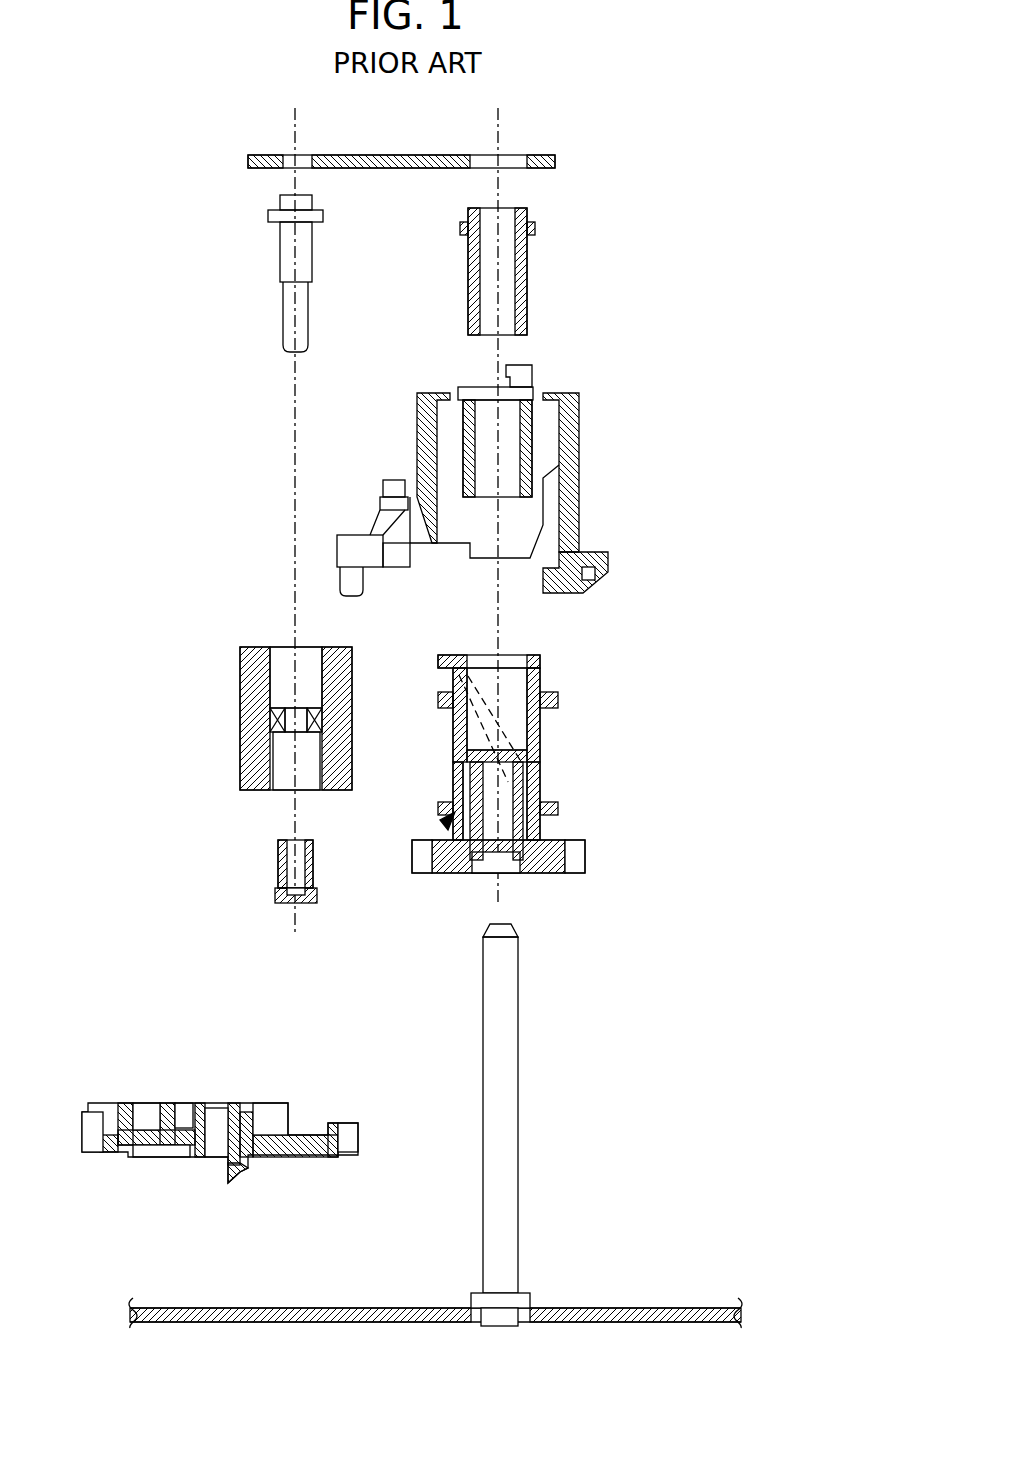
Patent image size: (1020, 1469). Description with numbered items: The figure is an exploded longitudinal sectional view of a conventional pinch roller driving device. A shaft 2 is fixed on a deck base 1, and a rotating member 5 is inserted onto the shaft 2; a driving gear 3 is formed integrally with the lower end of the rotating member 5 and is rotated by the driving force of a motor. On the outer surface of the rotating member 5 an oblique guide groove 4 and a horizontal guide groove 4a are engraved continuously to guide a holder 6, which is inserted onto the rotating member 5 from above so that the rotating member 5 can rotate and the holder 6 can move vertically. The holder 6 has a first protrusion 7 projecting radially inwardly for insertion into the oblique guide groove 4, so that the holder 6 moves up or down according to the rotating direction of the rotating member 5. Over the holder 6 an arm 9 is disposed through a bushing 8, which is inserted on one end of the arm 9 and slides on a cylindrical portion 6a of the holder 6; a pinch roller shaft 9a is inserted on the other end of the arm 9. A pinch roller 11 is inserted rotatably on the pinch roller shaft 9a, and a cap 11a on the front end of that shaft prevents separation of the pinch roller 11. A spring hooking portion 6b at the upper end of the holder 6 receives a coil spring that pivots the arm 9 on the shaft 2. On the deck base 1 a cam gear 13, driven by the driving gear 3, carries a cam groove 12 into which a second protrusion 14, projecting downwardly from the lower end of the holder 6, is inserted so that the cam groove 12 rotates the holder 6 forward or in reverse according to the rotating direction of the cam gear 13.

The deck base 1 is at (676, 1308).
The shaft 2 is at (512, 1165).
The driving gear 3 is at (585, 855).
The oblique guide groove 4 is at (452, 722).
The horizontal guide groove 4a is at (446, 824).
The rotating member 5 is at (540, 745).
The holder 6 is at (530, 472).
The cylindrical portion 6a is at (510, 434).
The spring hooking portion 6b is at (520, 372).
The first protrusion 7 is at (543, 580).
The bushing 8 is at (528, 268).
The arm 9 is at (540, 153).
The pinch roller shaft 9a is at (280, 240).
The pinch roller 11 is at (240, 690).
The cap 11a is at (280, 857).
The cam groove 12 is at (194, 1111).
The cam gear 13 is at (84, 1136).
The second protrusion 14 is at (352, 580).